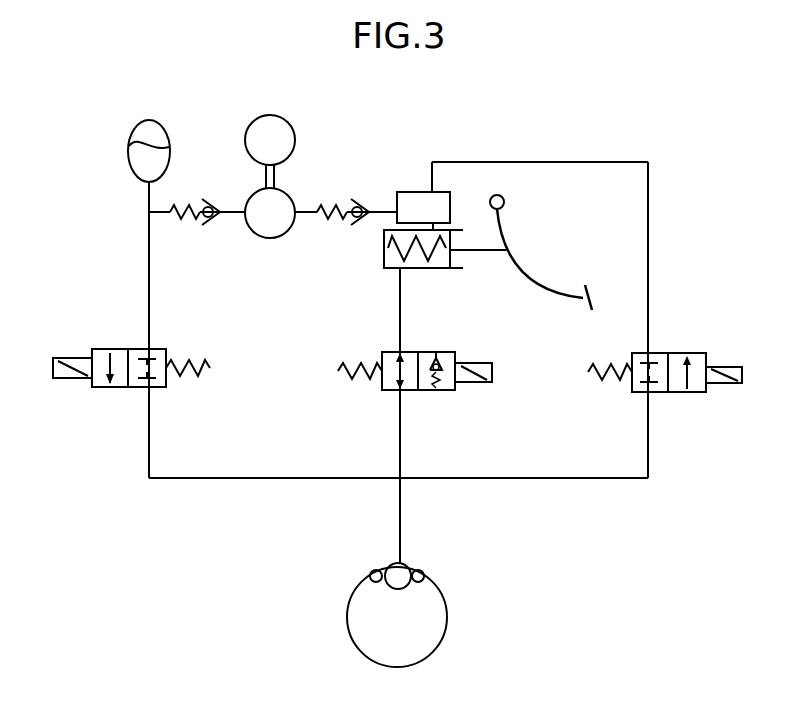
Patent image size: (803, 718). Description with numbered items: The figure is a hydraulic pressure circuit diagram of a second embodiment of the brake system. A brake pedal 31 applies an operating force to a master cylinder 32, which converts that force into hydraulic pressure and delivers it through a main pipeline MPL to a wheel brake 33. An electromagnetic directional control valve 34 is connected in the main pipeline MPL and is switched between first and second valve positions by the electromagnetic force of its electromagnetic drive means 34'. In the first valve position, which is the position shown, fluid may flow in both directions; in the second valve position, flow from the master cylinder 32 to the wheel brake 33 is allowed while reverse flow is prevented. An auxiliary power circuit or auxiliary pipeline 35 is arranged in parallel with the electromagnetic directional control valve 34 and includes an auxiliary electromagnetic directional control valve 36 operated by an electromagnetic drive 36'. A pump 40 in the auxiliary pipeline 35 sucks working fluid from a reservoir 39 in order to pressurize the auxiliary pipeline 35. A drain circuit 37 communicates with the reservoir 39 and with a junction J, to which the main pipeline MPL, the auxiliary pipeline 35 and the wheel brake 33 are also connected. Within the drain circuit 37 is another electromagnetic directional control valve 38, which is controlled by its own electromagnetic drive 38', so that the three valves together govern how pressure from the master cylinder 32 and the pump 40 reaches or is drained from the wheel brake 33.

The brake pedal 31 is at (552, 287).
The master cylinder 32 is at (384, 262).
The wheel brake 33 is at (402, 561).
The electromagnetic directional control valve 34 is at (411, 373).
The electromagnetic drive means 34' is at (497, 394).
The auxiliary pipeline 35 is at (147, 289).
The auxiliary electromagnetic directional control valve 36 is at (151, 403).
The electromagnetic drive 36' is at (55, 391).
The drain circuit 37 is at (648, 252).
The electromagnetic directional control valve 38 is at (648, 353).
The electromagnetic drive 38' is at (741, 397).
The reservoir 39 is at (413, 192).
The pump 40 is at (291, 192).
The main pipeline MPL is at (400, 433).
The junction J is at (400, 478).